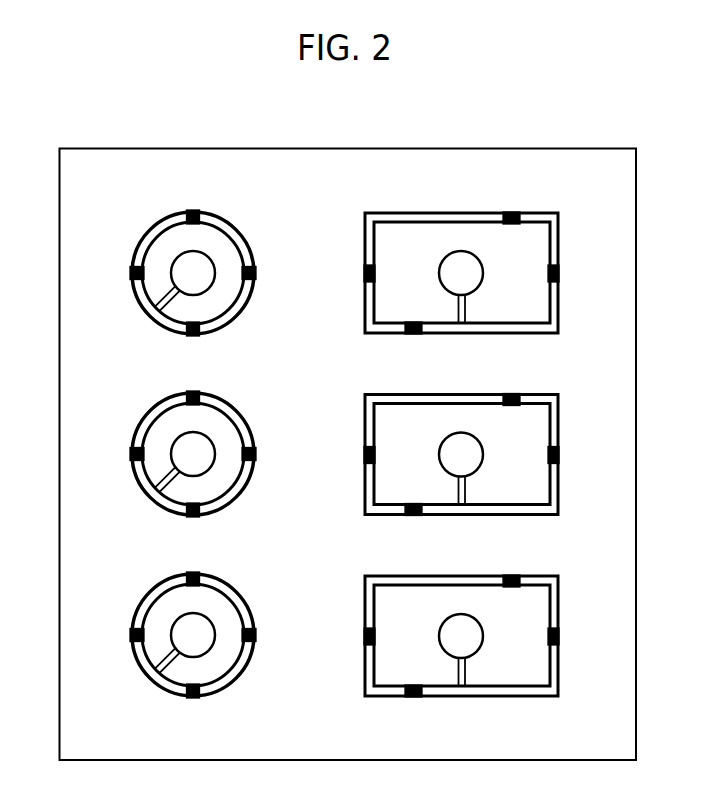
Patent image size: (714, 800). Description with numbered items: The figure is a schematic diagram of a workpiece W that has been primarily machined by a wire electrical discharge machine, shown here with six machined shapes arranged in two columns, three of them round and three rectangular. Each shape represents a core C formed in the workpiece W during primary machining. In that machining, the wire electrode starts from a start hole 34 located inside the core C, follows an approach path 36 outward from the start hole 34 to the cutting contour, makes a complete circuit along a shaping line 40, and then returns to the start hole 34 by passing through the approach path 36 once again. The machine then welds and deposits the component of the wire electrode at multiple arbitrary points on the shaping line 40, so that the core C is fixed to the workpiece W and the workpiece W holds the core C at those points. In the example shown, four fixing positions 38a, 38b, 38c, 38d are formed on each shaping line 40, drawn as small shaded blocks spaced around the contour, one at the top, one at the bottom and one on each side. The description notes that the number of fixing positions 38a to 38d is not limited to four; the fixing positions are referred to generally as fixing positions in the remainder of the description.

The workpiece W is at (321, 167).
The core C is at (153, 236).
The start hole 34 is at (196, 268).
The approach path 36 is at (163, 303).
The fixing position 38a is at (131, 276).
The fixing position 38b is at (193, 211).
The fixing position 38c is at (257, 274).
The fixing position 38d is at (193, 337).
The shaping line 40 is at (231, 316).